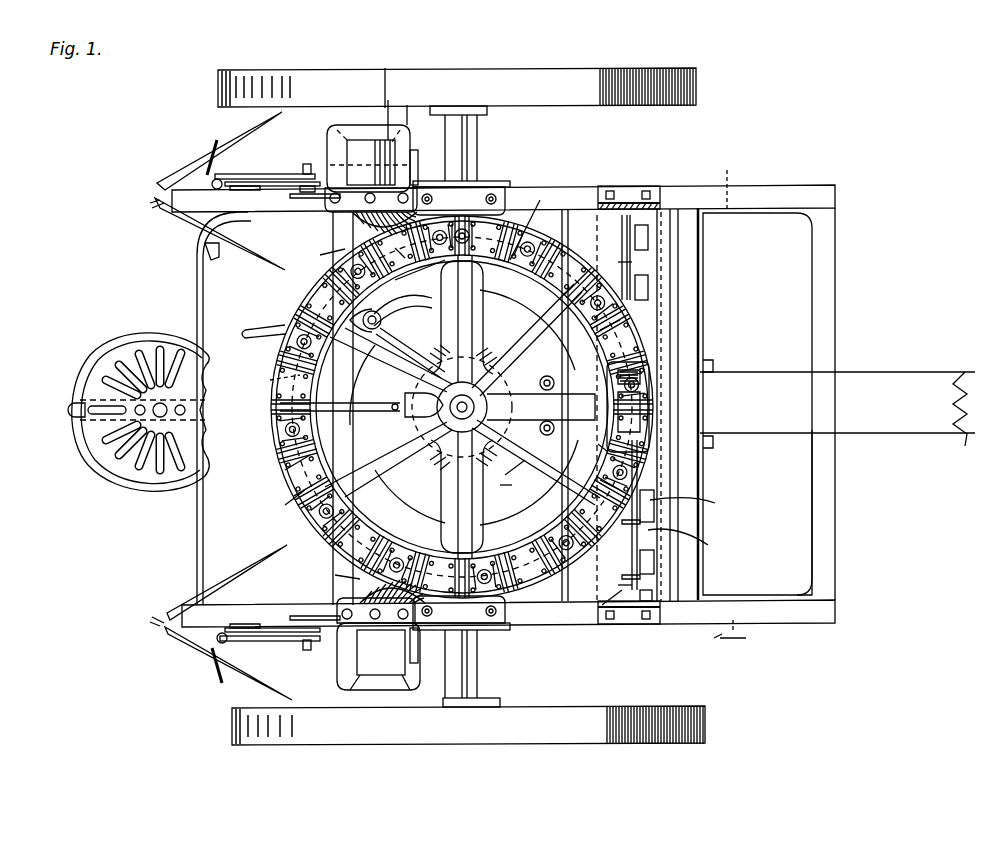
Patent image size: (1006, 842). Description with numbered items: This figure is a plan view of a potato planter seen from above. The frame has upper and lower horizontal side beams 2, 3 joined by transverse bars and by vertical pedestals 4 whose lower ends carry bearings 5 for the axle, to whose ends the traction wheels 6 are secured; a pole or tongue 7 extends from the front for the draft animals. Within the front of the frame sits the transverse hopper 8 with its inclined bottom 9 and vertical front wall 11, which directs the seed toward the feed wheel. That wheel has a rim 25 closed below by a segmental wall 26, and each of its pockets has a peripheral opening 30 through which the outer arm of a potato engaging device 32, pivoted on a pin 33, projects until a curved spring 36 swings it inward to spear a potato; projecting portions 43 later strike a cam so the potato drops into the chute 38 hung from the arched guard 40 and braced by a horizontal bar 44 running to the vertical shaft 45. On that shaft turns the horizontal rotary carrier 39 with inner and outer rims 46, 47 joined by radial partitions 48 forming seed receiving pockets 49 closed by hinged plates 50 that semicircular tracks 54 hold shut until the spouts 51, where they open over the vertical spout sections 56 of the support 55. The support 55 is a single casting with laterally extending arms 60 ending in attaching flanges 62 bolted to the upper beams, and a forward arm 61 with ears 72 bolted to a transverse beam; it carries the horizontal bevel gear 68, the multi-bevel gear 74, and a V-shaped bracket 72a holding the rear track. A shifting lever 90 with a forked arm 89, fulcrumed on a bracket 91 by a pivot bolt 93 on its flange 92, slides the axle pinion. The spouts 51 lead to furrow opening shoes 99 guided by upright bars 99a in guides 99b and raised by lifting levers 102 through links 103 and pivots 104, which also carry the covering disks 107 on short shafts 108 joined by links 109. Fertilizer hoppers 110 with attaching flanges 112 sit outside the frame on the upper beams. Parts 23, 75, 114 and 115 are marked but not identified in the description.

The upper horizontal side beams 2 is at (175, 233).
The lower horizontal side beams 3 is at (68, 410).
The vertical pedestals 4 is at (482, 770).
The bearings 5 is at (502, 644).
The traction or supporting wheels 6 is at (461, 406).
The pole or tongue 7 is at (960, 405).
The hopper 8 is at (757, 404).
The bottom 9 is at (780, 505).
The front wall 11 is at (812, 340).
The guide bar 23 is at (660, 262).
The rim 25 is at (693, 504).
The segmental plate or wall 26 is at (620, 576).
The peripheral opening 30 is at (692, 543).
The potato engaging device 32 is at (655, 565).
The pin 33 is at (655, 507).
The curved spring 36 is at (645, 603).
The chute 38 is at (590, 446).
The horizontal rotary carrier 39 is at (280, 467).
The arched guard or support 40 is at (628, 197).
The projecting portions 43 is at (620, 248).
The horizontal bar 44 is at (503, 407).
The vertical shaft 45 is at (452, 415).
The inner rim 46 is at (535, 280).
The outer rim 47 is at (544, 205).
The radial partitions 48 is at (267, 382).
The seed receiving pockets 49 is at (283, 497).
The hinged plates 50 is at (462, 407).
The spouts 51 is at (326, 415).
The semicircular tracks 54 is at (262, 445).
The support 55 is at (503, 489).
The vertical spout sections 56 is at (432, 260).
The laterally extending arms 60 is at (477, 327).
The central forwardly extending arm 61 is at (603, 370).
The terminal attaching flanges 62 is at (415, 405).
The horizontal bevel gear 68 is at (451, 402).
The laterally extending ears 72 is at (590, 408).
The V-shaped supporting bracket 72a is at (361, 395).
The horizontal multi-bevel gear 74 is at (482, 394).
The spoke 75 is at (505, 470).
The forked arm 89 is at (407, 310).
The shifting lever 90 is at (261, 324).
The bracket 91 is at (359, 320).
The forwardly projecting flange 92 is at (404, 282).
The pivot bolt 93 is at (410, 347).
The furrow opening shoes 99 is at (438, 150).
The upright bars 99a is at (340, 630).
The guides 99b is at (308, 224).
The lifting levers 102 is at (205, 175).
The links or rods 103 is at (286, 165).
The short transverse rods or pivots 104 is at (312, 158).
The covering disks 107 is at (138, 406).
The short shaft 108 is at (235, 272).
The links or bars 109 is at (280, 168).
The fertilizer hoppers 110 is at (373, 407).
The horizontal attaching flanges 112 is at (350, 200).
The rod 114 is at (408, 140).
The rod 115 is at (392, 162).